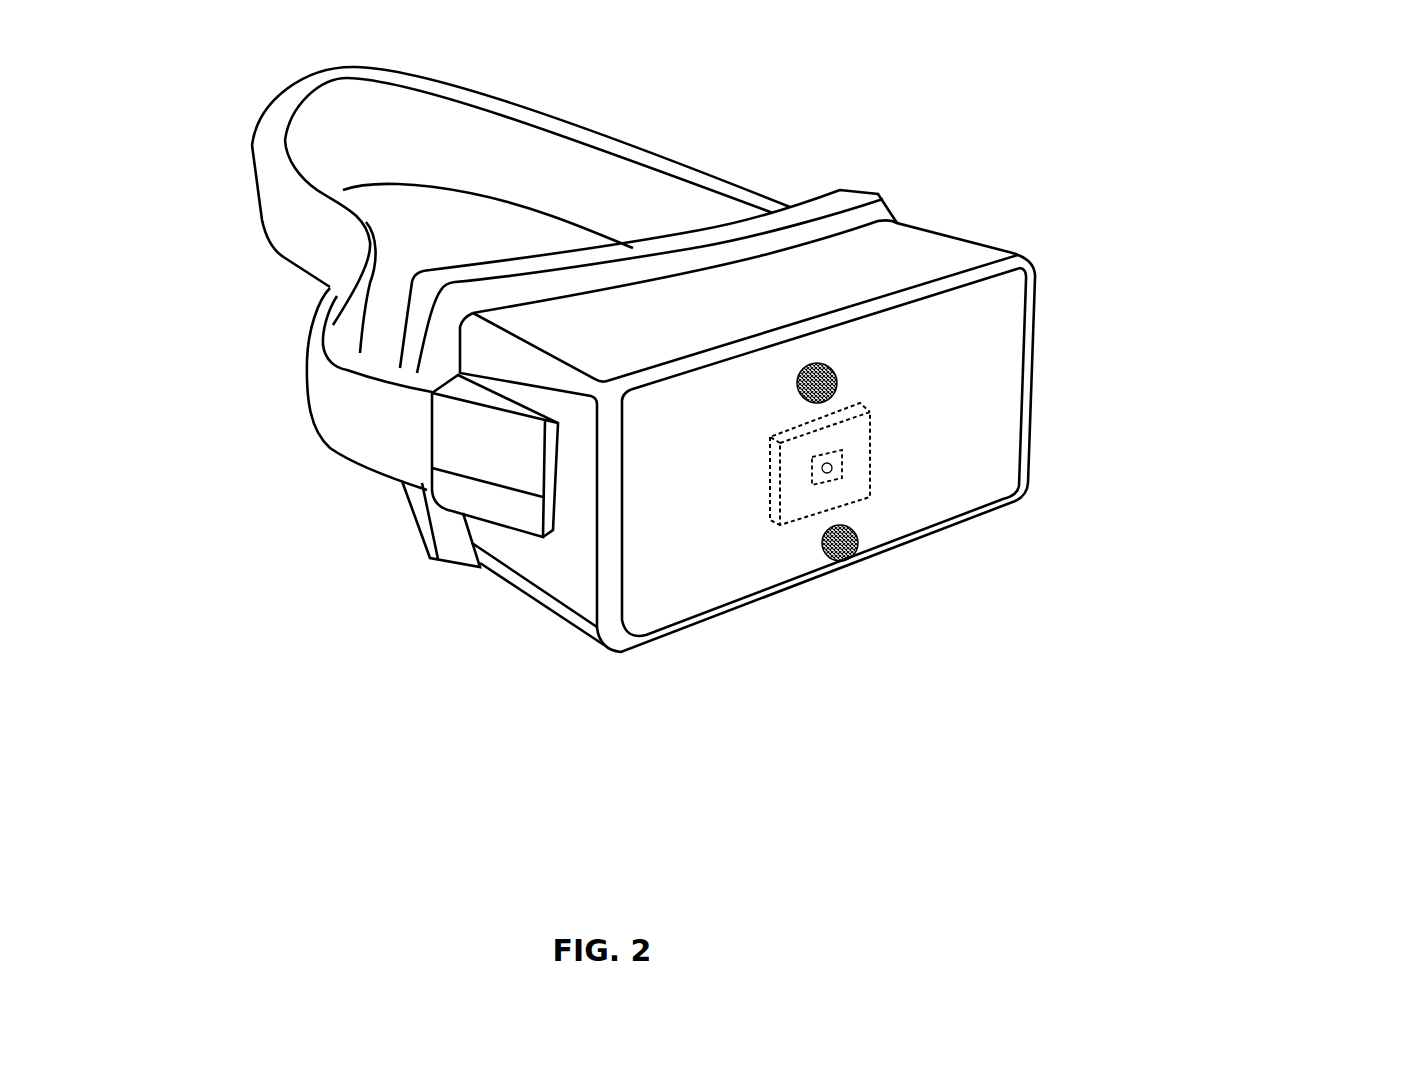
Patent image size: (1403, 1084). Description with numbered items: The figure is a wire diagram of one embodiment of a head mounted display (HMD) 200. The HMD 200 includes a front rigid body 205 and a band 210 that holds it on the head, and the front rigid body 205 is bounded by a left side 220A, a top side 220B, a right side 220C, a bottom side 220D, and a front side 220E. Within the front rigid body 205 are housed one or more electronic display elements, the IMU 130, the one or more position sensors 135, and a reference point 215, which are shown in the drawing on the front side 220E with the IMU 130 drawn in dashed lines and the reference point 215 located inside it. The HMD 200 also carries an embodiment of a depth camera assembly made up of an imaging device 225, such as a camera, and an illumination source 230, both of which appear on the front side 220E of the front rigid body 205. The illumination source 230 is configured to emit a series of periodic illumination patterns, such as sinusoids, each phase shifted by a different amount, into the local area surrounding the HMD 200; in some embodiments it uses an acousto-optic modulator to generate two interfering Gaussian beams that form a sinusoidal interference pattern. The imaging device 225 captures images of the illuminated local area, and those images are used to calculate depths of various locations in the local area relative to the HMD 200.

The head mounted display (HMD) 200 is at (139, 64).
The front rigid body 205 is at (759, 441).
The band 210 is at (652, 147).
The reference point 215 is at (832, 474).
The left side 220A is at (995, 242).
The top side 220B is at (563, 320).
The right side 220C is at (565, 562).
The bottom side 220D is at (508, 616).
The front side 220E is at (663, 606).
The imaging device 225 is at (860, 560).
The illumination source 230 is at (838, 368).
The IMU 130 is at (875, 481).
The position sensors 135 is at (814, 488).